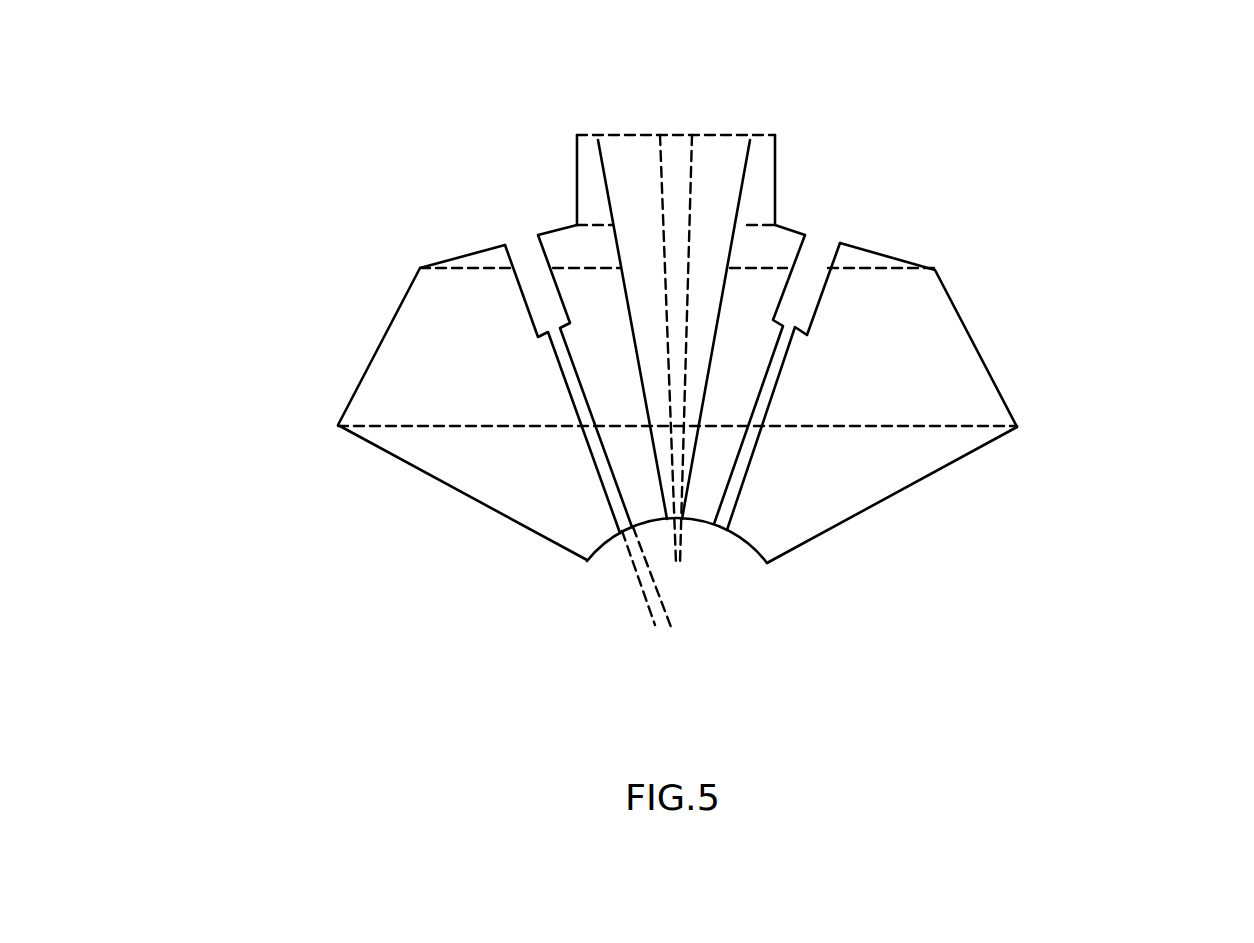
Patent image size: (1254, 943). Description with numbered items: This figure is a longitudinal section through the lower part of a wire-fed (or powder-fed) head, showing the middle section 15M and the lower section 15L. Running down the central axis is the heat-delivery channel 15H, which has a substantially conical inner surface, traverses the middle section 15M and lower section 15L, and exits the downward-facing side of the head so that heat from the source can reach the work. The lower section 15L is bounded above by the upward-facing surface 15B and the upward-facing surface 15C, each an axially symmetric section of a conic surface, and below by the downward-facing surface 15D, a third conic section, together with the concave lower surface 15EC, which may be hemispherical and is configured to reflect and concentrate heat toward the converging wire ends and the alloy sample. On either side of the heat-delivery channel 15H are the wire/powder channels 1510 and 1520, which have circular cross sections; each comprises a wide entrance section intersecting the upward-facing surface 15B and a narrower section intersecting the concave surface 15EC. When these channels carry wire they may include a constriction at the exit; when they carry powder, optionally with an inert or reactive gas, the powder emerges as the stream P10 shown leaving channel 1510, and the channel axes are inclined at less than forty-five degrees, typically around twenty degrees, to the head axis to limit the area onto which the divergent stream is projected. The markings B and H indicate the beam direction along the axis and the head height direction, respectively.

The middle section 15M is at (542, 130).
The lower section 15L is at (1150, 230).
The heat-delivery channel 15H is at (713, 185).
The upward-facing surface 15B is at (878, 253).
The upward-facing surface 15C is at (385, 327).
The downward-facing surface 15D is at (825, 532).
The wire/powder channel 1510 is at (575, 395).
The wire/powder channel 1520 is at (765, 398).
The concave lower surface 15EC is at (753, 548).
The powder stream P10 is at (634, 590).
The beam / jet axis B is at (673, 190).
The height direction H is at (677, 130).